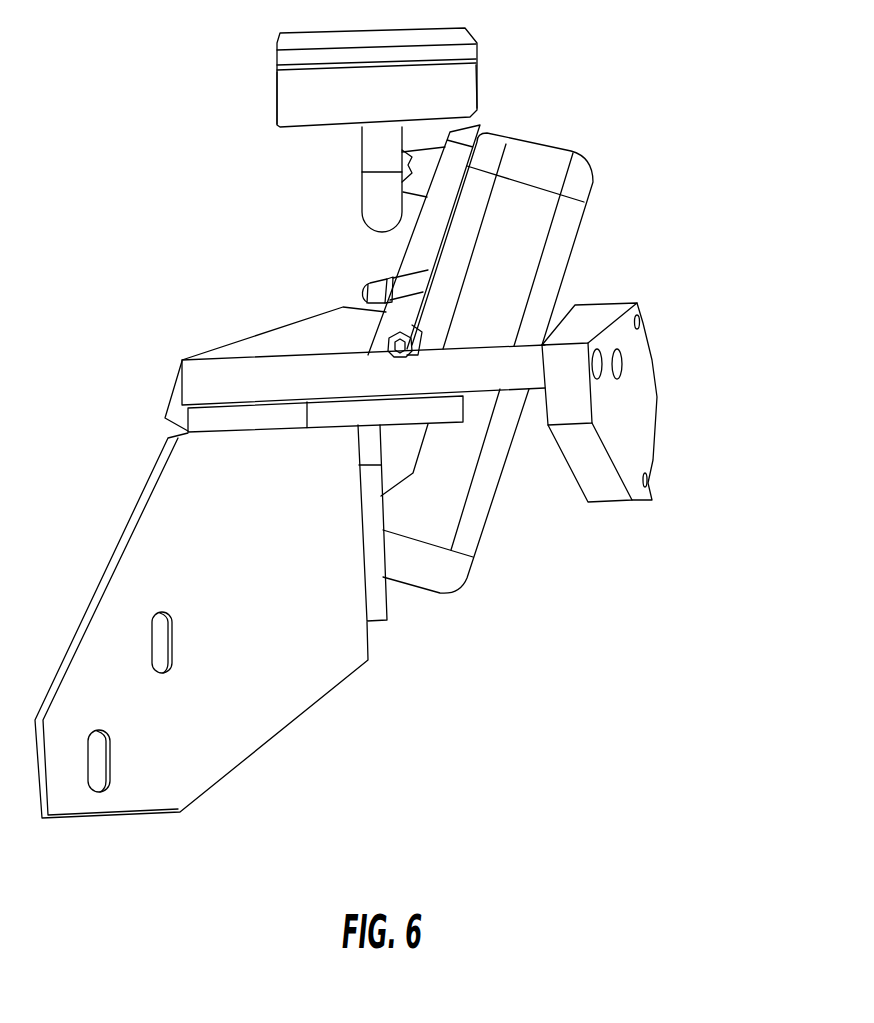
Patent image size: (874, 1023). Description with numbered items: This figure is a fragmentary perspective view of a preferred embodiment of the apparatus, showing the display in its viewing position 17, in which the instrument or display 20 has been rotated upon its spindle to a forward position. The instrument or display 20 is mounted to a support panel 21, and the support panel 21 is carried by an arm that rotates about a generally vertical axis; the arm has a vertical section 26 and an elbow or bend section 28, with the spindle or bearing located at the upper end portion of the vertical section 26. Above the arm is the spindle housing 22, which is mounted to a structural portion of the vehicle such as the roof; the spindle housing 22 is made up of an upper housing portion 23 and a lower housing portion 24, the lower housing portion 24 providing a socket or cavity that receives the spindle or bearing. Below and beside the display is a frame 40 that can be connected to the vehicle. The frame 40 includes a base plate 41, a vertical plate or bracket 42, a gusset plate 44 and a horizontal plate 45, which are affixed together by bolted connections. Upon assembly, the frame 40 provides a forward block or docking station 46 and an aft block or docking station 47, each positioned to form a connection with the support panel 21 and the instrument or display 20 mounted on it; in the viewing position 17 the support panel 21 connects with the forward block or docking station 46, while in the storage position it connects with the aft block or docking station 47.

The viewing position 17 is at (668, 216).
The instrument or display 20 is at (580, 178).
The support panel 21 is at (481, 124).
The spindle housing 22 is at (470, 37).
The upper housing portion 23 is at (287, 60).
The lower housing portion 24 is at (302, 98).
The vertical section 26 is at (376, 155).
The elbow or bend section 28 is at (383, 210).
The frame 40 is at (267, 747).
The base plate 41 is at (265, 380).
The vertical plate or bracket 42 is at (266, 598).
The gusset plate 44 is at (377, 607).
The horizontal plate 45 is at (347, 420).
The forward block or docking station 46 is at (316, 330).
The aft block or docking station 47 is at (645, 420).